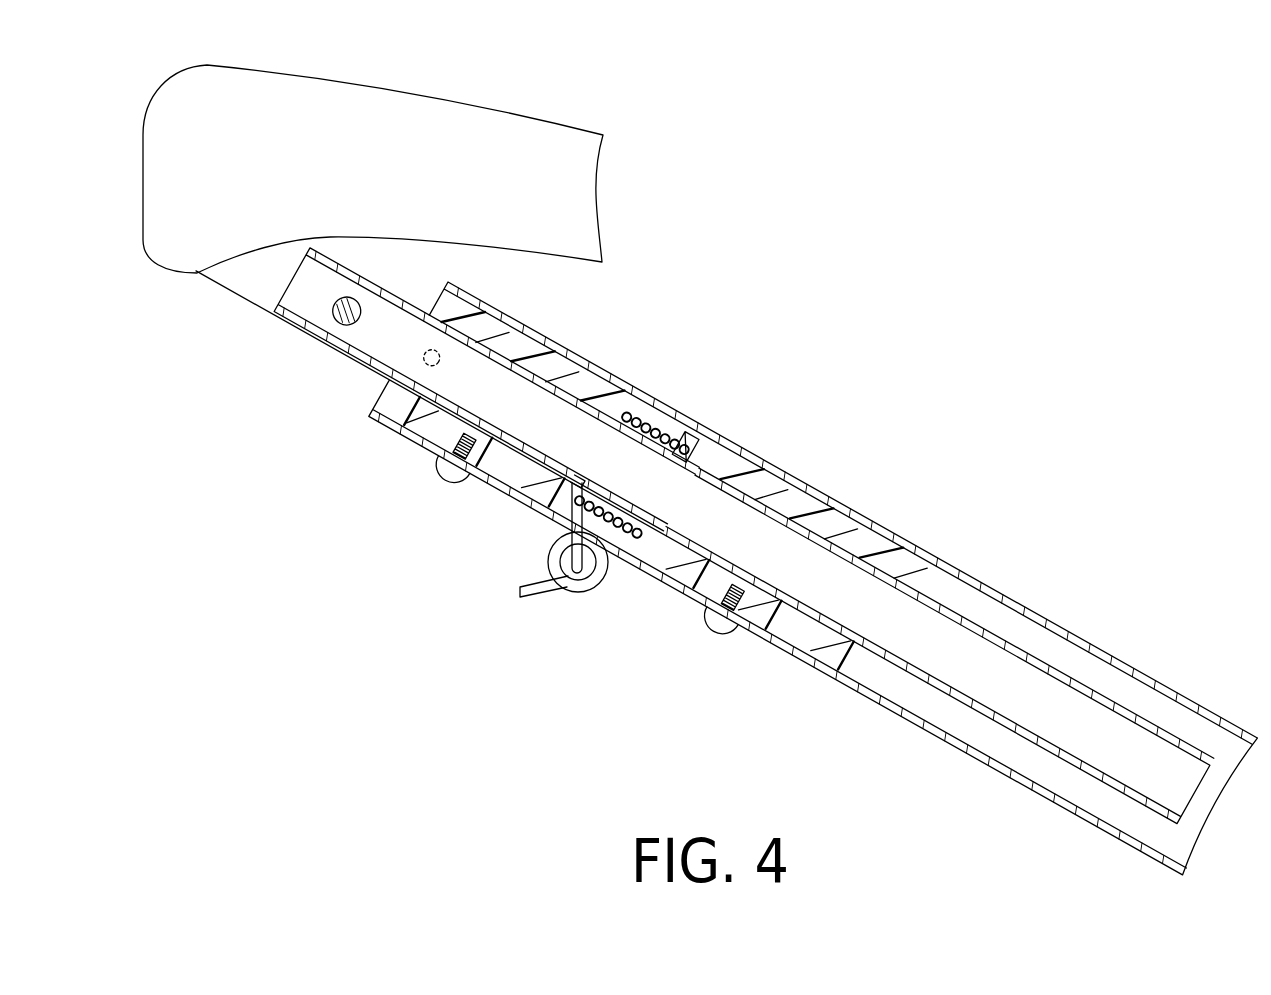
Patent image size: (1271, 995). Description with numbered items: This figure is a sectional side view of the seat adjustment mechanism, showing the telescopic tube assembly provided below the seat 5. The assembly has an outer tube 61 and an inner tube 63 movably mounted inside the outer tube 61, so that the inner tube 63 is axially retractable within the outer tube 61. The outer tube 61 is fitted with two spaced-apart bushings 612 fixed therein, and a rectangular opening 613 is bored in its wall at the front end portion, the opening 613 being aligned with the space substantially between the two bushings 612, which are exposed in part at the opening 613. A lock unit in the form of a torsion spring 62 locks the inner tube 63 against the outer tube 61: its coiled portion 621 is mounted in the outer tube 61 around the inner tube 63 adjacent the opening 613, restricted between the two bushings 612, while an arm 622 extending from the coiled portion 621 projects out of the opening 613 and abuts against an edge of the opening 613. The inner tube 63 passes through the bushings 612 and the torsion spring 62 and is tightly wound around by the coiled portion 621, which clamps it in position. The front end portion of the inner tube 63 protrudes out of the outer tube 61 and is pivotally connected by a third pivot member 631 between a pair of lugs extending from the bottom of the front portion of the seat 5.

The seat 5 is at (417, 155).
The outer tube 61 is at (1043, 618).
The bushings 612 is at (571, 352).
The rectangular opening 613 is at (621, 545).
The torsion spring 62 is at (690, 448).
The coiled portion 621 is at (645, 420).
The arm 622 is at (573, 522).
The inner tube 63 is at (385, 376).
The third pivot member 631 is at (338, 322).